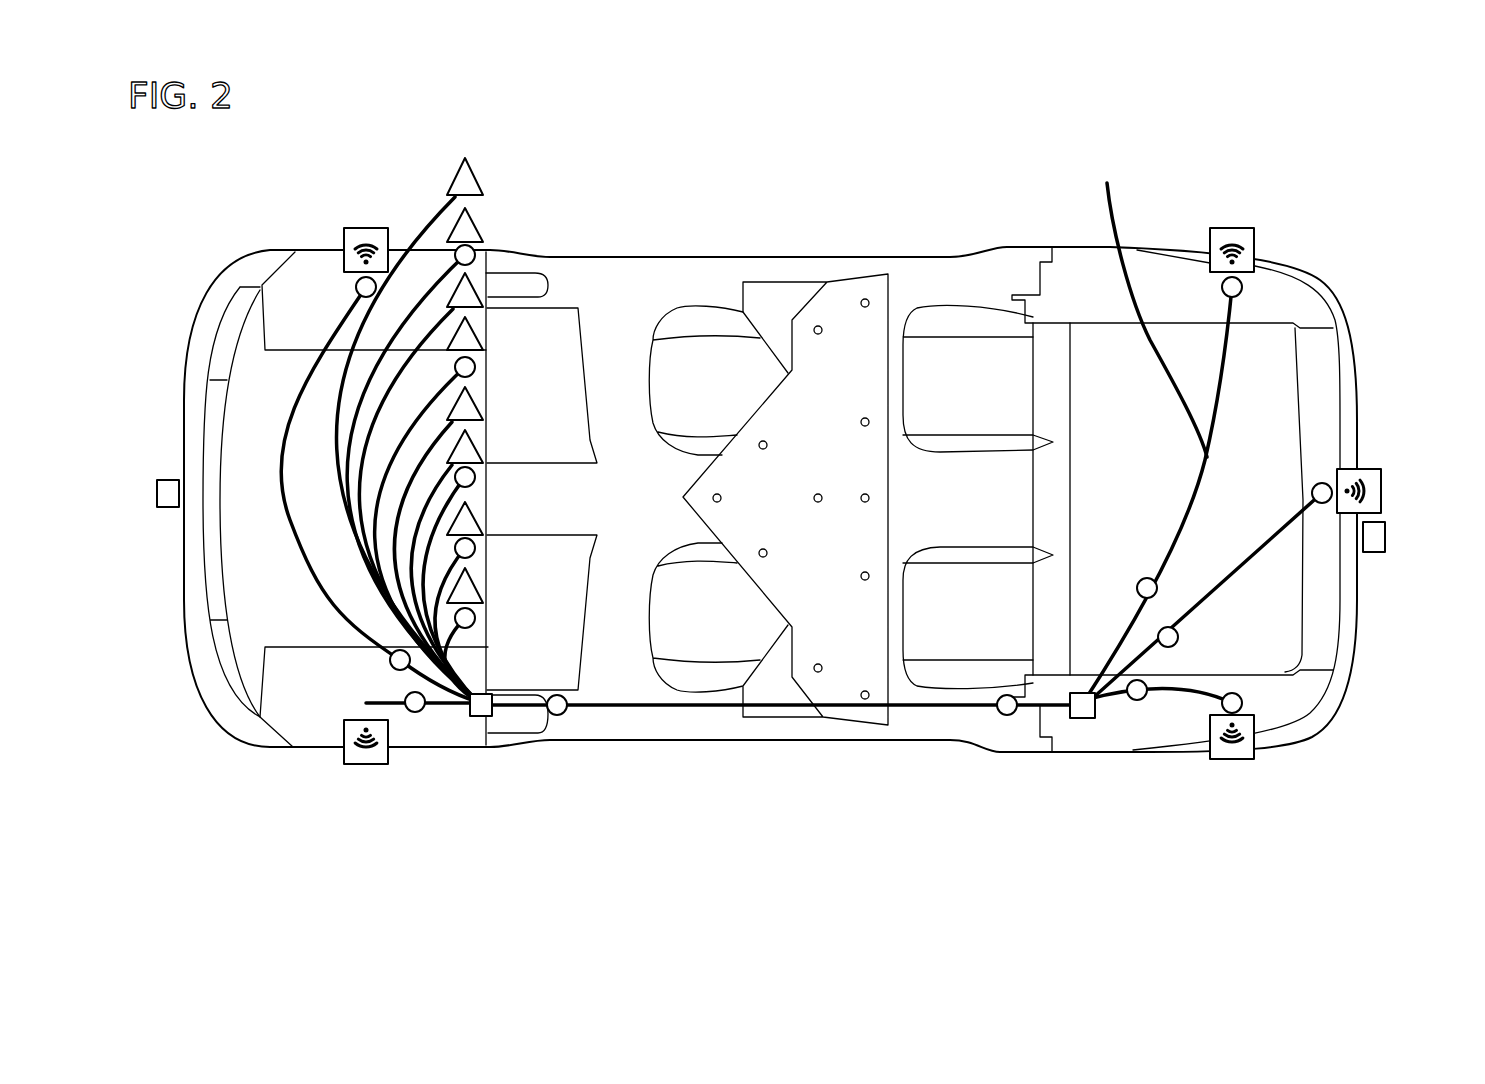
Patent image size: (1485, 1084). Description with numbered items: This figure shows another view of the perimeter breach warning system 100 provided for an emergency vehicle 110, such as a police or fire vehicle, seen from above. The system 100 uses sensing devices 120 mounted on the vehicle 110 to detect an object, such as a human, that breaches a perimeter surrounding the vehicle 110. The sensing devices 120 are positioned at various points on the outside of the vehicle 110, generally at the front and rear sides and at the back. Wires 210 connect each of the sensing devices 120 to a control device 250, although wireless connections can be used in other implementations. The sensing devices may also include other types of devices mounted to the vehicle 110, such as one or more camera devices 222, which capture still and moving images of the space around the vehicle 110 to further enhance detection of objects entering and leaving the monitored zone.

The perimeter breach warning system 100 is at (1335, 78).
The emergency vehicle 110 is at (1062, 247).
The sensing device 120 is at (368, 228).
The wire 210 is at (148, 602).
The camera device 222 is at (168, 480).
The control device 250 is at (485, 710).